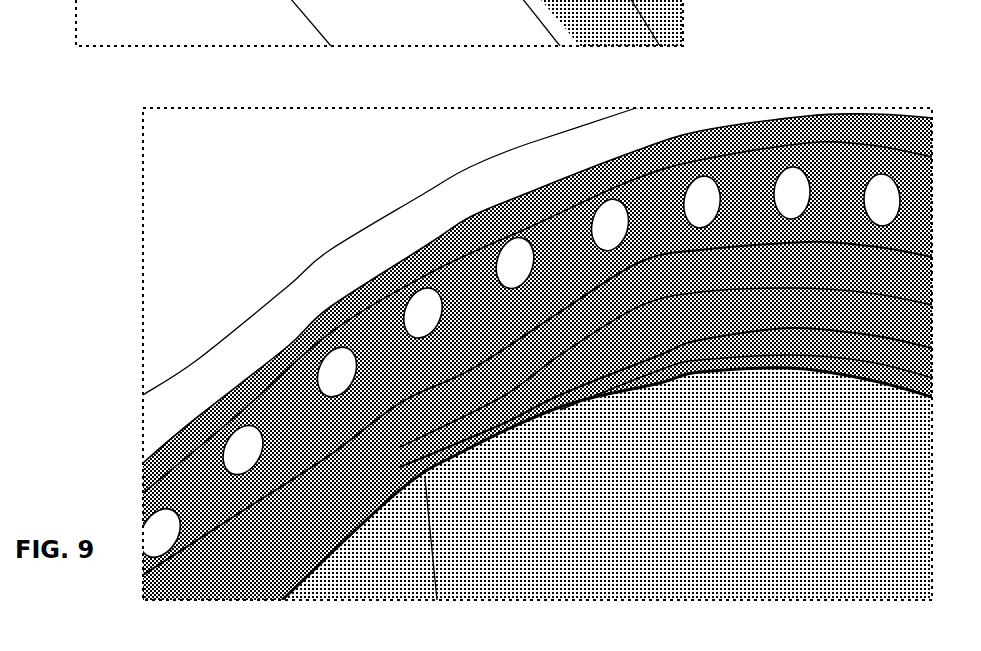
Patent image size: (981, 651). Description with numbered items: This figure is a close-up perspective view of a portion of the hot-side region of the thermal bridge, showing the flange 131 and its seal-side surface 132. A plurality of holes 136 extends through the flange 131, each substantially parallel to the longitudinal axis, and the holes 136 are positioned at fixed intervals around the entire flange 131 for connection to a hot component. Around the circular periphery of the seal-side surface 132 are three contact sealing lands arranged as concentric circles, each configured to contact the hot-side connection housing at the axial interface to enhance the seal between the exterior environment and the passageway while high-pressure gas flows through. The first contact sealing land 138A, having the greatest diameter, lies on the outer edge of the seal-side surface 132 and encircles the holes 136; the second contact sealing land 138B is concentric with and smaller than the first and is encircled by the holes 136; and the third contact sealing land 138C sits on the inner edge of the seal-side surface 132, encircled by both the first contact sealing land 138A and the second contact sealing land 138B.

The flange 131 is at (669, 128).
The seal-side surface 132 is at (652, 207).
The holes 136 is at (793, 192).
The first contact sealing land 138A is at (287, 348).
The second contact sealing land 138B is at (327, 457).
The third contact sealing land 138C is at (327, 533).